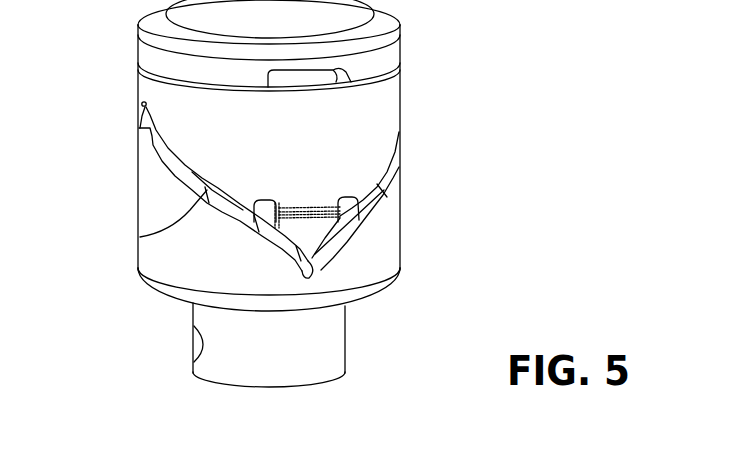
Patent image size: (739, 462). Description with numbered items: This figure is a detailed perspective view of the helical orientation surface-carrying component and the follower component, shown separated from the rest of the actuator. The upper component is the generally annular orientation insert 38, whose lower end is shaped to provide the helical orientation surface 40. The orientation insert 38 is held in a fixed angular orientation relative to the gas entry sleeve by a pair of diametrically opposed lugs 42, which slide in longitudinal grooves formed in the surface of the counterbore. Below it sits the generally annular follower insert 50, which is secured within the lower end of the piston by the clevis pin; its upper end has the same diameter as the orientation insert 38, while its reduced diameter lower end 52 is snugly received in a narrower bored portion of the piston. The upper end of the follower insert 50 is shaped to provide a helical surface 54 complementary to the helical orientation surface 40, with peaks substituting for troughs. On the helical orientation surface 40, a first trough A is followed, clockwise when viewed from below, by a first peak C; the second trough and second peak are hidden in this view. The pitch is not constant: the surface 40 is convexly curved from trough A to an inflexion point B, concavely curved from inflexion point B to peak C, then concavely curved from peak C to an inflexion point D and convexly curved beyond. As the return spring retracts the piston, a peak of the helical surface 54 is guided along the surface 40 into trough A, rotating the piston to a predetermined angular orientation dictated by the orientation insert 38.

The orientation insert 38 is at (433, 89).
The helical orientation surface 40 is at (139, 136).
The lugs 42 is at (357, 243).
The follower insert 50 is at (118, 270).
The reduced diameter lower end 52 is at (338, 352).
The helical surface 54 is at (393, 168).
The first trough A is at (140, 113).
The inflexion point B is at (140, 237).
The first peak C is at (360, 283).
The inflexion point D is at (387, 197).